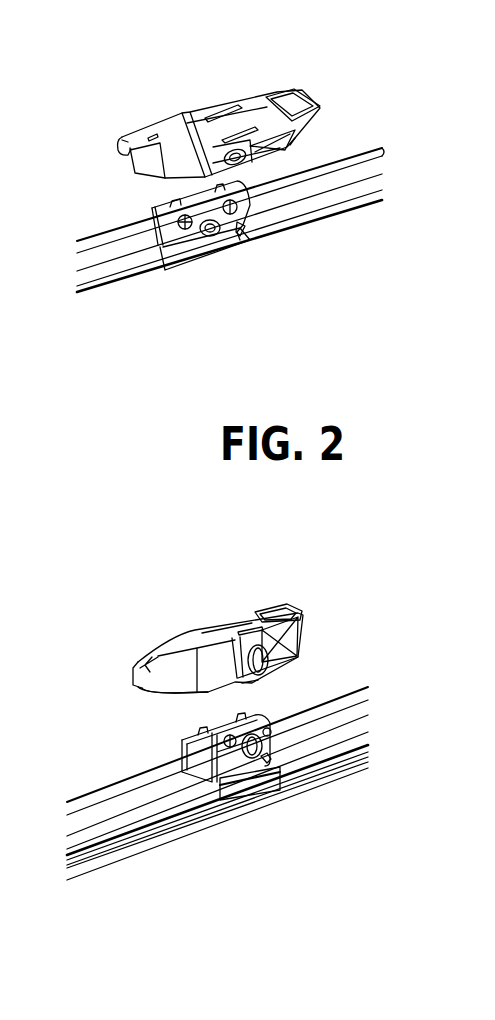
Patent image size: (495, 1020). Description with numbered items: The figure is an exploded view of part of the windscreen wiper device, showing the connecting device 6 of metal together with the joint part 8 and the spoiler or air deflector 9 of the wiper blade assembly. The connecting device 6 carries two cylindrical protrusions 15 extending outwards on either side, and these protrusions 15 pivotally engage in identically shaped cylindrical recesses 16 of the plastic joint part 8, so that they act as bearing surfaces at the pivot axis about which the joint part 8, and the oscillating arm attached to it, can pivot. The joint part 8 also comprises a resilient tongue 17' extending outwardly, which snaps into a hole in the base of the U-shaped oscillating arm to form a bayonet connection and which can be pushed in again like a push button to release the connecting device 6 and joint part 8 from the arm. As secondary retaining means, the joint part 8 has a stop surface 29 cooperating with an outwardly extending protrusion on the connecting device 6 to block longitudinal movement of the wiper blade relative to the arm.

The joint part 8 is at (255, 110).
The resilient tongue 17' is at (311, 342).
The cylindrical recesses 16 is at (250, 156).
The spoiler 9 is at (367, 167).
The cylindrical protrusions 15 is at (212, 184).
The connecting device 6 is at (183, 252).
The stop surface 29 is at (253, 693).